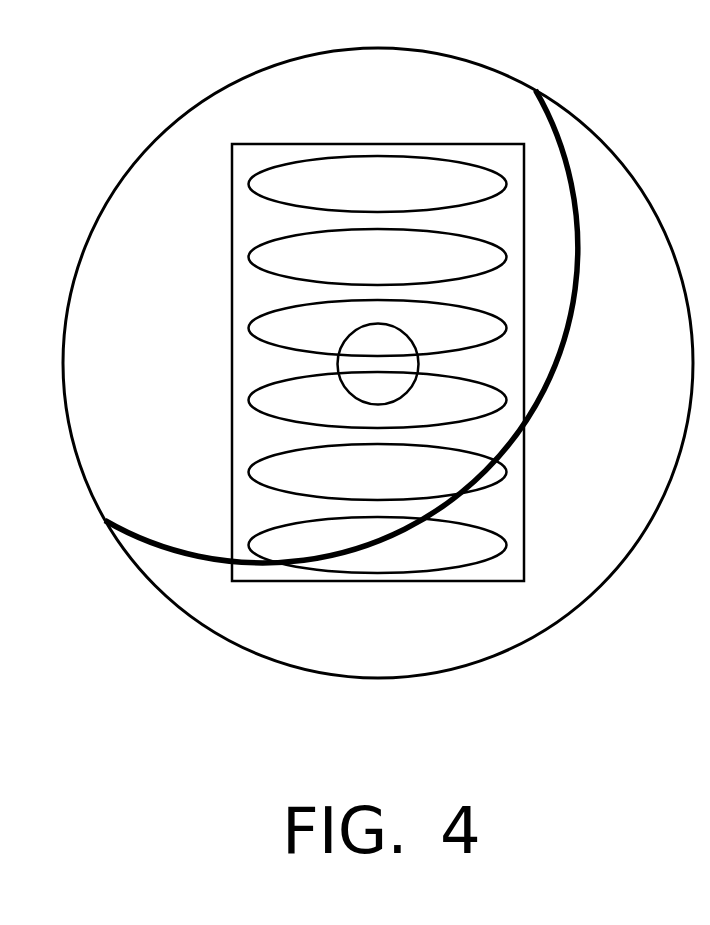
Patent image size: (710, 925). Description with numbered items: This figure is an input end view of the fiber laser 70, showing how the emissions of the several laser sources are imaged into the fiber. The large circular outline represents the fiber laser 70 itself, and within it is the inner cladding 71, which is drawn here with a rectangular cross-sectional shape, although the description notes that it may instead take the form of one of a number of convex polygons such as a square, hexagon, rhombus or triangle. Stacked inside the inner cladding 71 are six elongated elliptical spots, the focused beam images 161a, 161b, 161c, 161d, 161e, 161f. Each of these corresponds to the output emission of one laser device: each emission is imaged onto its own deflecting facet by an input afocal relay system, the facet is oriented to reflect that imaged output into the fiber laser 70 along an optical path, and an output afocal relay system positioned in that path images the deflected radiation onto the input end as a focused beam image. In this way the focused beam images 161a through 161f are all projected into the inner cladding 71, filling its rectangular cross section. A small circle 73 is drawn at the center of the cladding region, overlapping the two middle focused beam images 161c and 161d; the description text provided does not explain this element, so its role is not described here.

The fiber laser 70 is at (224, 88).
The inner cladding 71 is at (232, 529).
The central circular sensing region 73 is at (338, 363).
The focused beam image 161a is at (506, 184).
The focused beam image 161b is at (506, 257).
The focused beam image 161c is at (506, 328).
The focused beam image 161d is at (506, 400).
The focused beam image 161e is at (506, 472).
The focused beam image 161f is at (506, 545).